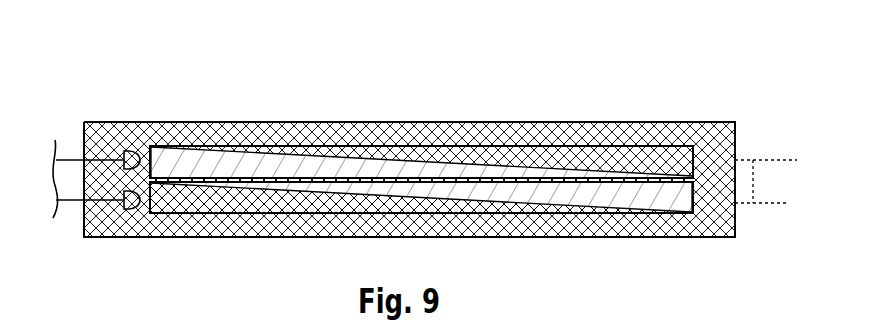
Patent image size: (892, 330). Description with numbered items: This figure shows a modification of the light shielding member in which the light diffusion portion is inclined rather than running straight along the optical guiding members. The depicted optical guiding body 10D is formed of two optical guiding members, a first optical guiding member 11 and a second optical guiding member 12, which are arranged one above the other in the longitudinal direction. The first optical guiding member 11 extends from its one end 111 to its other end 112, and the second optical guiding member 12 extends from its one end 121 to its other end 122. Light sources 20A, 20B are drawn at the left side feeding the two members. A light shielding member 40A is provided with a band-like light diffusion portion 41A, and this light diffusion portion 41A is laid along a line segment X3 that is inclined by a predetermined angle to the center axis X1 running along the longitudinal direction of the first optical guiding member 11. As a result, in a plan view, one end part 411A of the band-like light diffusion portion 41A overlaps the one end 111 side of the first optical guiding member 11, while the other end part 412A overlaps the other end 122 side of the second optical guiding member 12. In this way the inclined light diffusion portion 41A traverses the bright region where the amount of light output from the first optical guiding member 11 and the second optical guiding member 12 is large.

The optical guiding body 10D is at (383, 91).
The first optical guiding member 11 is at (321, 122).
The one end of the first optical guiding member 111 is at (150, 146).
The other end of the first optical guiding member 112 is at (707, 122).
The second optical guiding member 12 is at (265, 226).
The one end of the second optical guiding member 121 is at (150, 214).
The other end of the second optical guiding member 122 is at (708, 237).
The first light source 20A is at (127, 150).
The second light source 20B is at (122, 211).
The light shielding member 40A is at (608, 122).
The light diffusion portion 41A is at (495, 130).
The one end part of the light diffusion portion 411A is at (157, 147).
The other end part of the light diffusion portion 412A is at (690, 214).
The center axis X1 is at (778, 160).
The line segment X3 is at (773, 203).